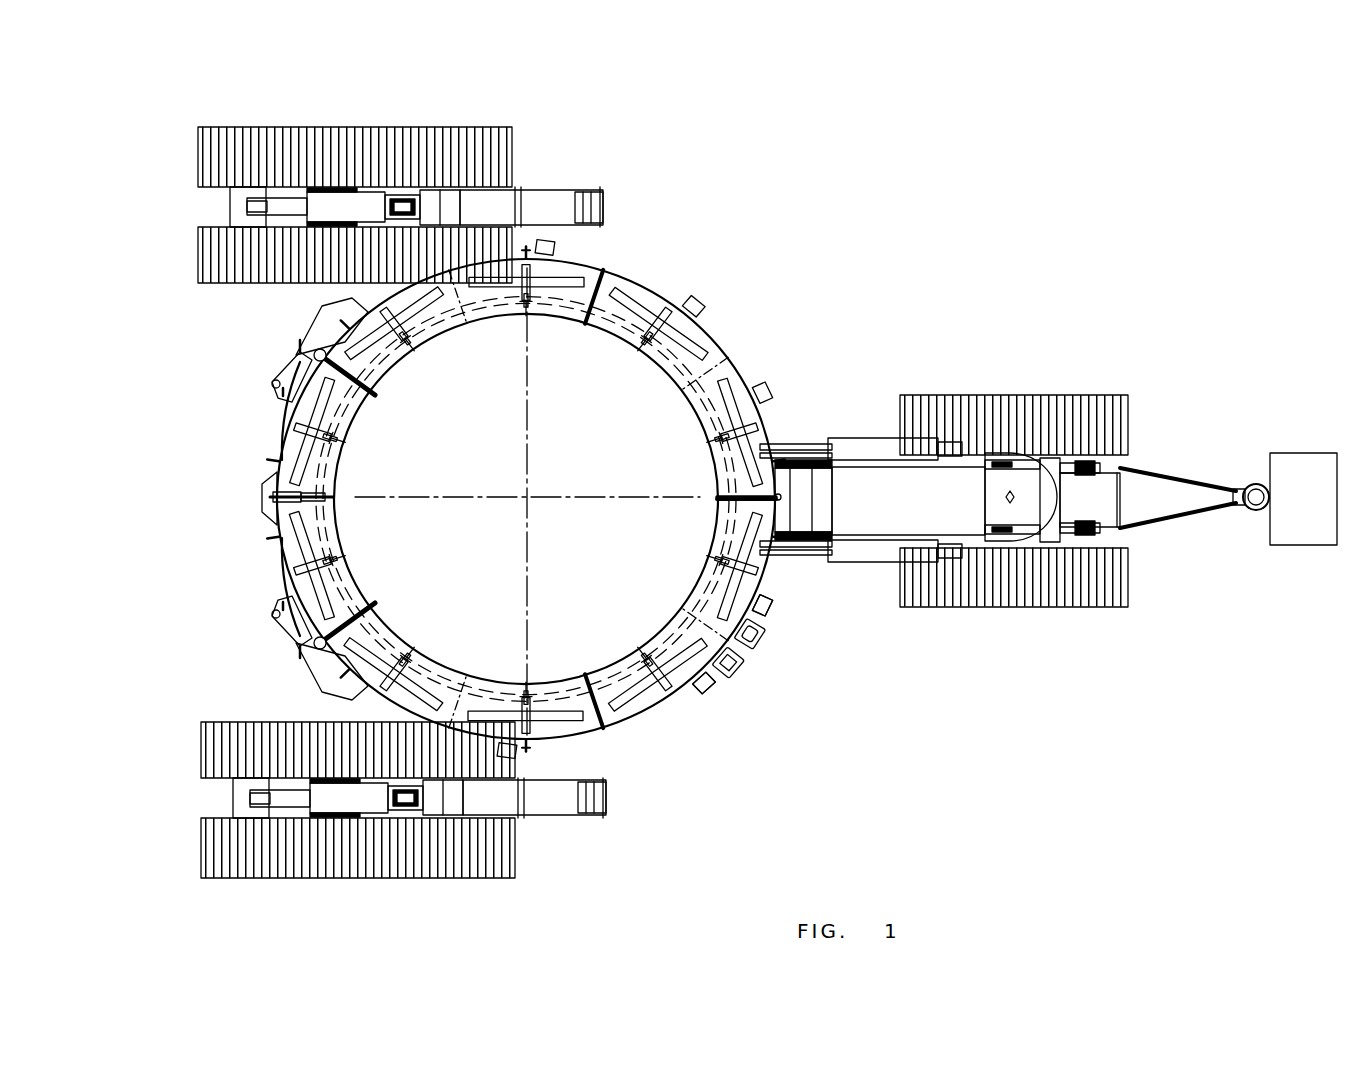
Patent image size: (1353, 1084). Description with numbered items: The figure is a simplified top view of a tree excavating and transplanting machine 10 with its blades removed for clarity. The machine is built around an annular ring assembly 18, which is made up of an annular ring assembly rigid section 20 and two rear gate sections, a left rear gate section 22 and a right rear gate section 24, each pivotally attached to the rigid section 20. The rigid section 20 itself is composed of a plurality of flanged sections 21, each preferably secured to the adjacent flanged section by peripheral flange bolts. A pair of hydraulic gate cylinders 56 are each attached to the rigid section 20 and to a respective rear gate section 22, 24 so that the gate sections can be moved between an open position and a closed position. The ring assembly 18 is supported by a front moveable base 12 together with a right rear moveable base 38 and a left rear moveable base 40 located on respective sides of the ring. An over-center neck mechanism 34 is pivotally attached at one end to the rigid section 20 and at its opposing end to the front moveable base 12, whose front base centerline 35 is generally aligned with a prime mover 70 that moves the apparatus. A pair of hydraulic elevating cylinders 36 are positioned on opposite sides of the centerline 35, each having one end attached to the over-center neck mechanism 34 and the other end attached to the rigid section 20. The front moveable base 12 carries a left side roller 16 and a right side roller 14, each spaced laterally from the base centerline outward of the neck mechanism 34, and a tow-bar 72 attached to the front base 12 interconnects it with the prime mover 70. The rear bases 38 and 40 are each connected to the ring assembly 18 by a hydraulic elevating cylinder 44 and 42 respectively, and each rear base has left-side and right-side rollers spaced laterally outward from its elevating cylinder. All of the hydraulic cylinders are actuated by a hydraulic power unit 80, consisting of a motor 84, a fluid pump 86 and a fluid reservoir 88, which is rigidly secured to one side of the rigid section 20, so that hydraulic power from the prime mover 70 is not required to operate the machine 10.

The tree excavating and transplanting machine 10 is at (742, 224).
The front moveable base 12 is at (944, 567).
The right side roller 14 is at (1014, 607).
The left side roller 16 is at (1014, 405).
The annular ring assembly 18 is at (664, 775).
The annular ring assembly rigid section 20 is at (736, 344).
The flanged sections 21 is at (526, 471).
The left rear gate section 22 is at (283, 458).
The right rear gate section 24 is at (282, 533).
The over-center neck mechanism 34 is at (908, 582).
The front base centerline 35 is at (527, 501).
The hydraulic elevating cylinders 36 is at (891, 499).
The right rear moveable base 38 is at (342, 724).
The left rear moveable base 40 is at (514, 143).
The hydraulic elevating cylinder 42 is at (442, 186).
The hydraulic elevating cylinder 44 is at (437, 823).
The hydraulic gate cylinders 56 is at (305, 336).
The prime mover 70 is at (1296, 545).
The tow-bar 72 is at (1194, 455).
The hydraulic power unit 80 is at (765, 698).
The motor 84 is at (712, 713).
The fluid pump 86 is at (825, 674).
The fluid reservoir 88 is at (762, 643).